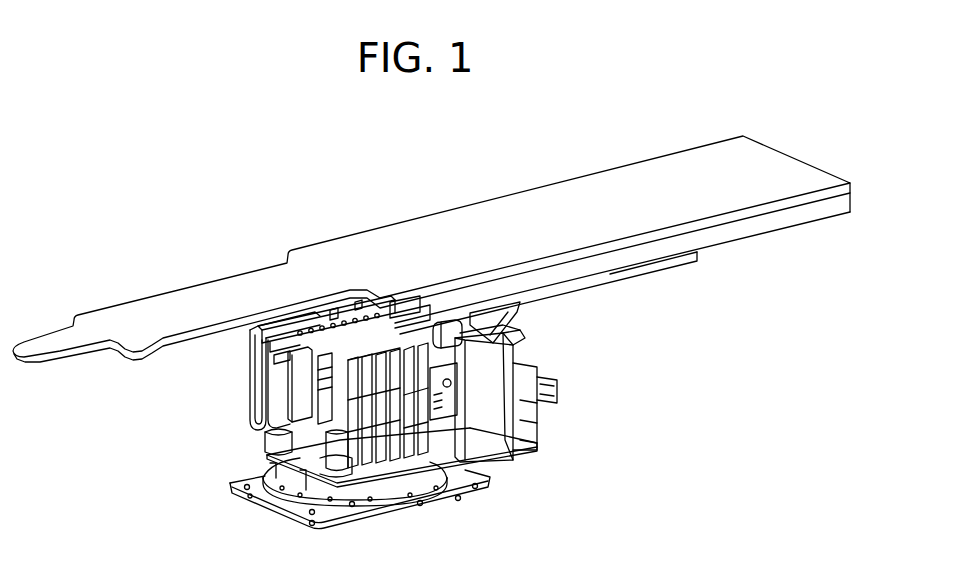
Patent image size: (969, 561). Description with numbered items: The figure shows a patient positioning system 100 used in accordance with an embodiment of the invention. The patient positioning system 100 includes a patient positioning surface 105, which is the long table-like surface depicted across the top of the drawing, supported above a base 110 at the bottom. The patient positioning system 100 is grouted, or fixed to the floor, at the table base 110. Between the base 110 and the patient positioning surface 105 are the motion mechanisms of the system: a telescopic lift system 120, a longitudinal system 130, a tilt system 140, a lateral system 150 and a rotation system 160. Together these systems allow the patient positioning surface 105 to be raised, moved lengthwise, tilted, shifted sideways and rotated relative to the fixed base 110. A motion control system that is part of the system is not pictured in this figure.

The patient positioning system 100 is at (153, 184).
The patient positioning surface 105 is at (572, 191).
The base 110 is at (433, 497).
The telescopic lift system 120 is at (487, 463).
The longitudinal system 130 is at (250, 337).
The tilt system 140 is at (515, 336).
The lateral system 150 is at (526, 314).
The rotation system 160 is at (260, 473).